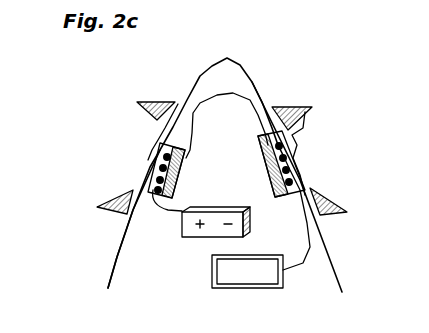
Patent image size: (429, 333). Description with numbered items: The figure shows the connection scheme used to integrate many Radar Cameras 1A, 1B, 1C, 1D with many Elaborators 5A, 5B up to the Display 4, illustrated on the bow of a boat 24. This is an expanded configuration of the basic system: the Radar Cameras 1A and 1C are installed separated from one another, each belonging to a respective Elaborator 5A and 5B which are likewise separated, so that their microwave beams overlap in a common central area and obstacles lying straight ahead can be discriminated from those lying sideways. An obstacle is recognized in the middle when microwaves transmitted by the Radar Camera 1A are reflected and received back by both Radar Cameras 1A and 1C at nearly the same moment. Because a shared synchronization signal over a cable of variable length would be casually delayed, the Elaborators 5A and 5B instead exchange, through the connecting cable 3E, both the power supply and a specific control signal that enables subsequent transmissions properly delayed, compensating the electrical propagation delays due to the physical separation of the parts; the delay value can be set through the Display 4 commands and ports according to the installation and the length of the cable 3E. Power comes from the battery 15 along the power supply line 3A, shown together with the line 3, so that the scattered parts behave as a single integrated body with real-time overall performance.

The bow of a boat 24 is at (229, 55).
The connecting cable 3E is at (235, 95).
The Radar Camera 1A is at (137, 103).
The Radar Camera 1B is at (97, 209).
The Radar Camera 1C is at (312, 115).
The Radar Camera 1D is at (335, 213).
The power supply line 3 is at (150, 145).
The Elaborator 5A is at (146, 173).
The Elaborator 5B is at (300, 157).
The power supply line 3A is at (173, 208).
The battery 15 is at (182, 237).
The Display 4 is at (283, 277).